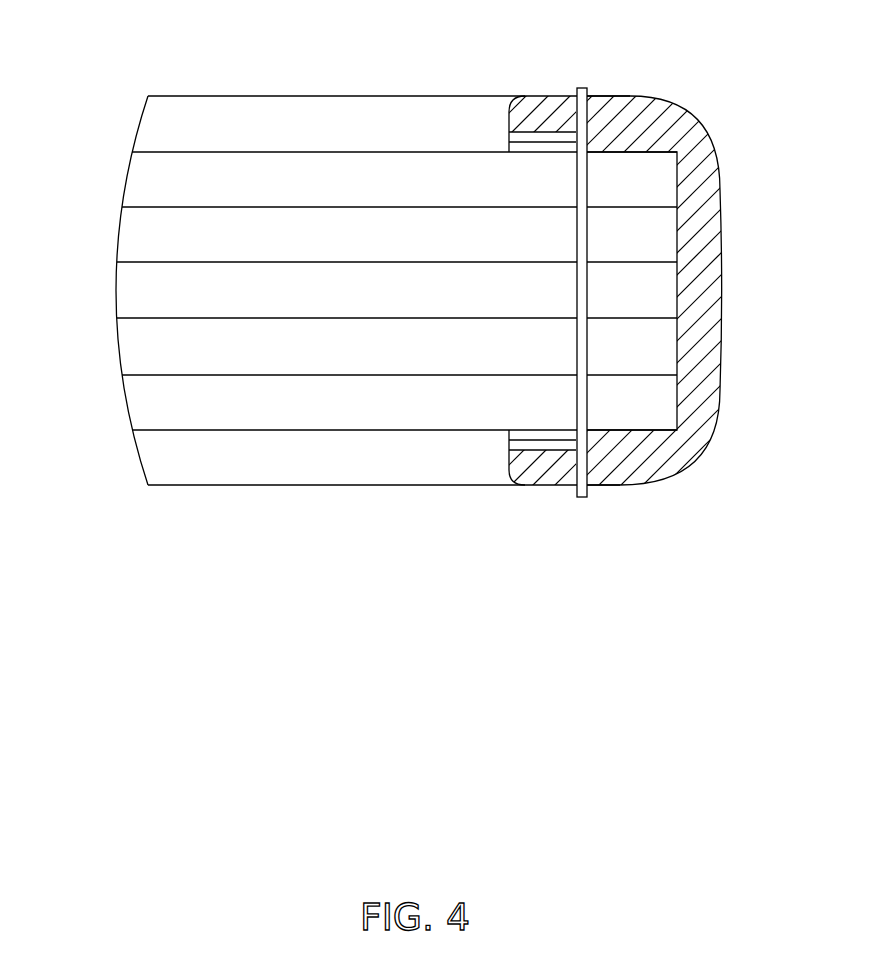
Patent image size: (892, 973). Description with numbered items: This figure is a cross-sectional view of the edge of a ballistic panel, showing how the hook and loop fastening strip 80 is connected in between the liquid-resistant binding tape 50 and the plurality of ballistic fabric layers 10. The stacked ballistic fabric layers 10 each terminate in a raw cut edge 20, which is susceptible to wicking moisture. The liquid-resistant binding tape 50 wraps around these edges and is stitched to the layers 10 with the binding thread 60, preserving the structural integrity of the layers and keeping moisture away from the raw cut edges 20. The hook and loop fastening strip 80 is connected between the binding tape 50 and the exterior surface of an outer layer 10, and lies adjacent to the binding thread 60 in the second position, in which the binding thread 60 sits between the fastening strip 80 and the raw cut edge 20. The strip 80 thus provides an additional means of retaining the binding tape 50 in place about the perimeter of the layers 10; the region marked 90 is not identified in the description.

The ballistic fabric layers 10 is at (133, 182).
The raw cut edge 20 is at (688, 185).
The liquid-resistant binding tape 50 is at (652, 110).
The binding thread 60 is at (581, 88).
The hook and loop fastening strip 80 is at (522, 118).
The gap 90 is at (413, 152).